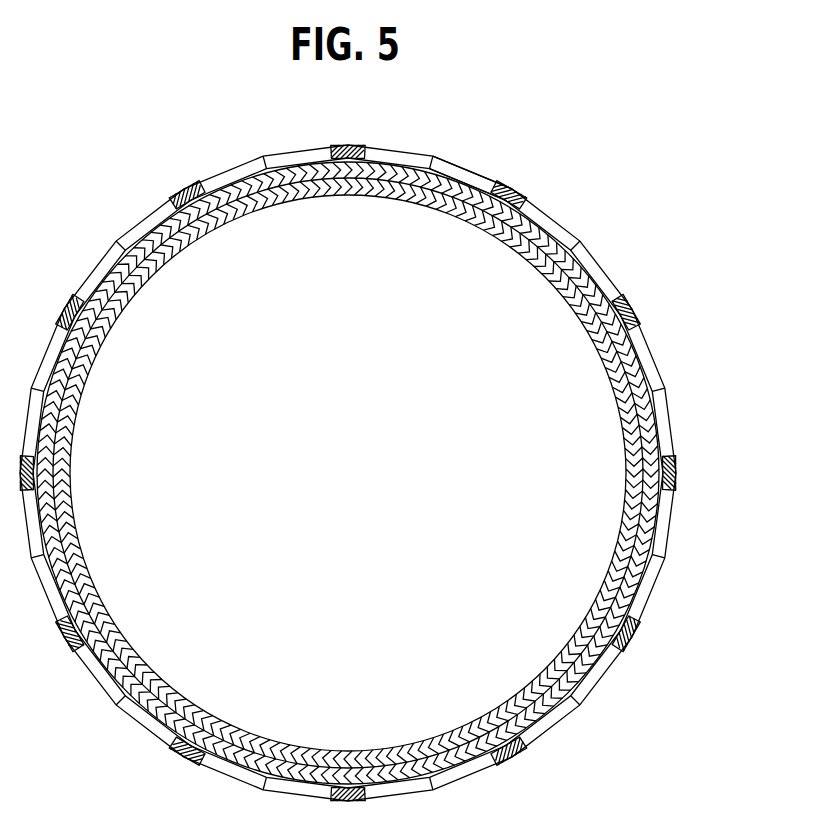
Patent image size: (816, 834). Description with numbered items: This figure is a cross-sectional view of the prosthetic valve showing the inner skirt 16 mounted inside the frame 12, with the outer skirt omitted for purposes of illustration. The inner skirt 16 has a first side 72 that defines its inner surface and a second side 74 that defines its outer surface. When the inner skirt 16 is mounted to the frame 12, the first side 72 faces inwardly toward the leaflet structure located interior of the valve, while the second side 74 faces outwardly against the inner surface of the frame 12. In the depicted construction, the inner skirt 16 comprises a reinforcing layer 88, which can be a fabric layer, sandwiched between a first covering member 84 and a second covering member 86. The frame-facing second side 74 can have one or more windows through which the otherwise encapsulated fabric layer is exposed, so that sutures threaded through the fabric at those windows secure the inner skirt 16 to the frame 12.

The frame 12 is at (657, 362).
The inner skirt 16 is at (207, 230).
The first side 72 is at (590, 333).
The second side 74 is at (658, 520).
The first covering member 84 is at (402, 193).
The second covering member 86 is at (440, 178).
The reinforcing layer 88 is at (535, 225).